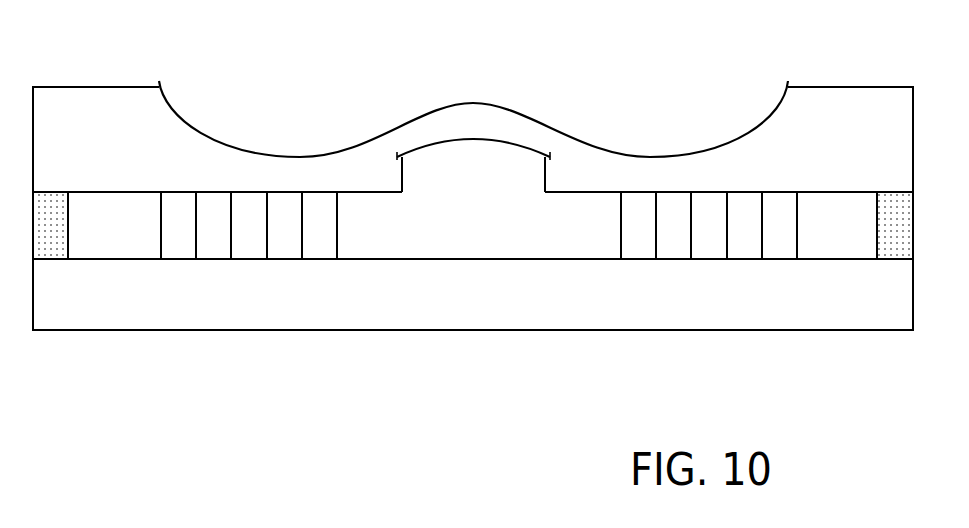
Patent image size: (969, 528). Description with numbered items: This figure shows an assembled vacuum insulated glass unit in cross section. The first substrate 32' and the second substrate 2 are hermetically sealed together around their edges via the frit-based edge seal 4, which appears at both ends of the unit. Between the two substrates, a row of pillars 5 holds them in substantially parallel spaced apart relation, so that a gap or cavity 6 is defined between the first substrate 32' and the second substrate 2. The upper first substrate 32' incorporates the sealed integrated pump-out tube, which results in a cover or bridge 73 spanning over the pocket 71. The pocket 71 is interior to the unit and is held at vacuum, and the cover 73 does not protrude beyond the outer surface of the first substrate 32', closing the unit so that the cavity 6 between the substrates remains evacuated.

The second substrate 2 is at (433, 295).
The frit-based edge seal 4 is at (53, 225).
The pillars 5 is at (313, 225).
The gap or cavity 6 is at (380, 247).
The first substrate 32' is at (473, 141).
The pocket 71 is at (478, 172).
The cover or bridge 73 is at (475, 123).